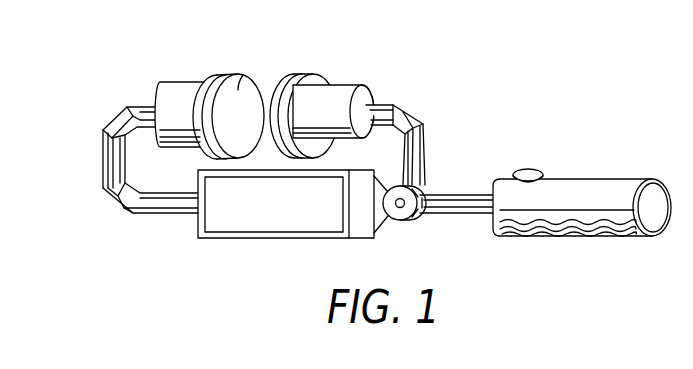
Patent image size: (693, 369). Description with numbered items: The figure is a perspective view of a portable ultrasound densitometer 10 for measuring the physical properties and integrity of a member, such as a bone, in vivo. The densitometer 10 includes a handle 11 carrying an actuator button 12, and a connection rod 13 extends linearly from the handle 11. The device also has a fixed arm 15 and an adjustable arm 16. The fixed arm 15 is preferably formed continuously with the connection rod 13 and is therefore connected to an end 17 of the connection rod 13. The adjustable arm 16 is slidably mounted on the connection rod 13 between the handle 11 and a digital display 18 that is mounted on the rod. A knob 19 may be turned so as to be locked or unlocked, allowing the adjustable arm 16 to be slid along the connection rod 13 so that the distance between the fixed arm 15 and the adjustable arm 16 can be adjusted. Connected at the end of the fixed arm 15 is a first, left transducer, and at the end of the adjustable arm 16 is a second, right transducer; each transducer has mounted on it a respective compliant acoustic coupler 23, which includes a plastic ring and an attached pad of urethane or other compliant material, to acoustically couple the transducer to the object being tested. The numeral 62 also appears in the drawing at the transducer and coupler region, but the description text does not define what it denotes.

The portable ultrasound densitometer 10 is at (371, 143).
The handle 11 is at (623, 178).
The actuator button 12 is at (527, 168).
The connection rod 13 is at (472, 194).
The fixed arm 15 is at (118, 112).
The adjustable arm 16 is at (428, 138).
The end of the connection rod 17 is at (140, 215).
The digital display 18 is at (233, 234).
The knob 19 is at (399, 222).
The compliant acoustic coupler 23 is at (259, 87).
The disc assembly 62 is at (268, 95).